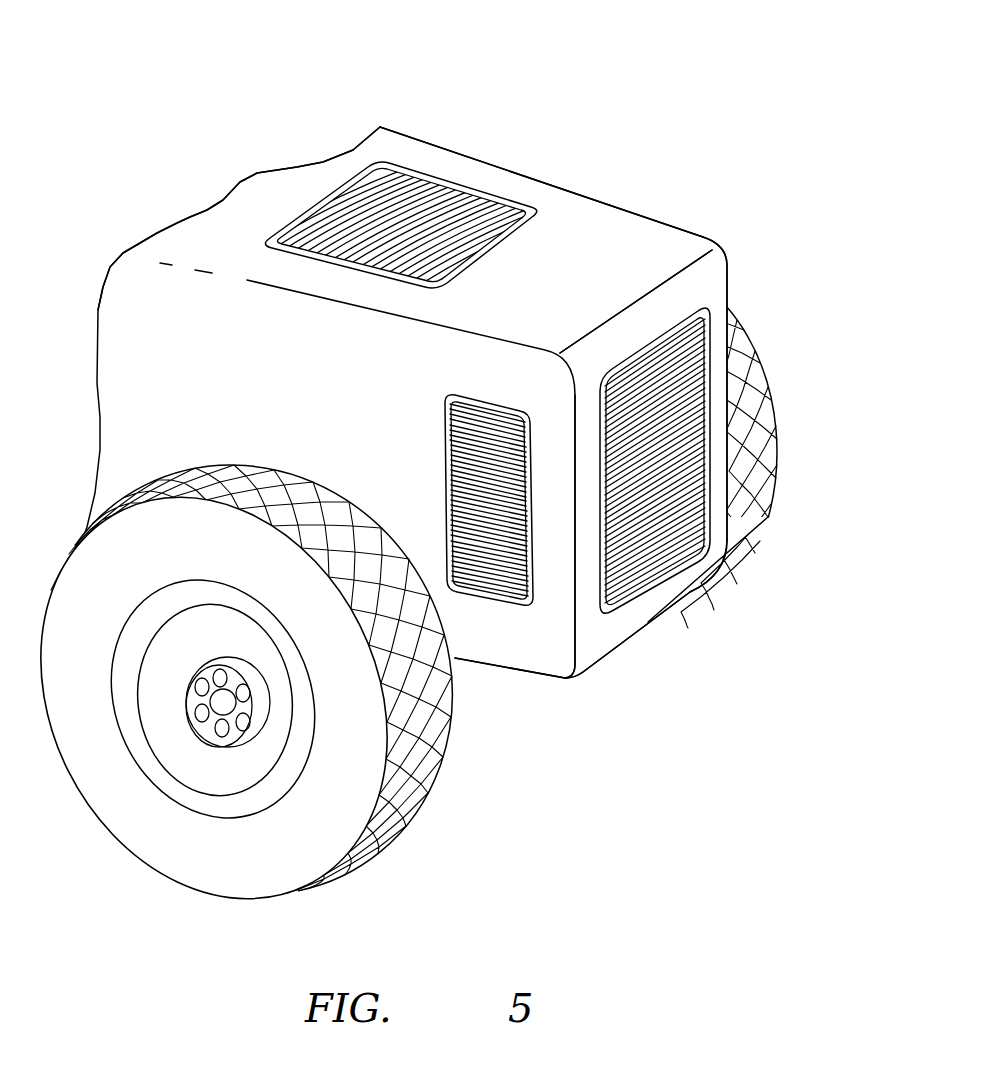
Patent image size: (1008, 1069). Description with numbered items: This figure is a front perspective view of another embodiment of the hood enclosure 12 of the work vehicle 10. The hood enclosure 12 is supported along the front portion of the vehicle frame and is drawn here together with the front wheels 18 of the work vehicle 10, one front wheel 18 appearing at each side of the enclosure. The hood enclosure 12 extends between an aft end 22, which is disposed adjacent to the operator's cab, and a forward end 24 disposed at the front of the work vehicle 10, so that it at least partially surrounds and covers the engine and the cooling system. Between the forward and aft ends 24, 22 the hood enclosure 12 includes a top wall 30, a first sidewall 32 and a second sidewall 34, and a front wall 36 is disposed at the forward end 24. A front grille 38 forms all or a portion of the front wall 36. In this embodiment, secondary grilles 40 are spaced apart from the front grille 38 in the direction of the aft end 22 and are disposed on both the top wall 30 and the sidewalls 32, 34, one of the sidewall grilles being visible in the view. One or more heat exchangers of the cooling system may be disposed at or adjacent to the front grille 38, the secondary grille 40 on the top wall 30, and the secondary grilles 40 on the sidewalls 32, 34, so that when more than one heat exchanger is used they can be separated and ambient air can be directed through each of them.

The work vehicle 10 is at (680, 98).
The hood enclosure 12 is at (627, 240).
The front wheels 18 is at (780, 467).
The aft end 22 is at (192, 213).
The forward end 24 is at (713, 290).
The top wall 30 is at (557, 197).
The first sidewall 32 is at (543, 637).
The second sidewall 34 is at (610, 200).
The front wall 36 is at (648, 614).
The front grille 38 is at (703, 543).
The secondary grilles 40 is at (363, 203).